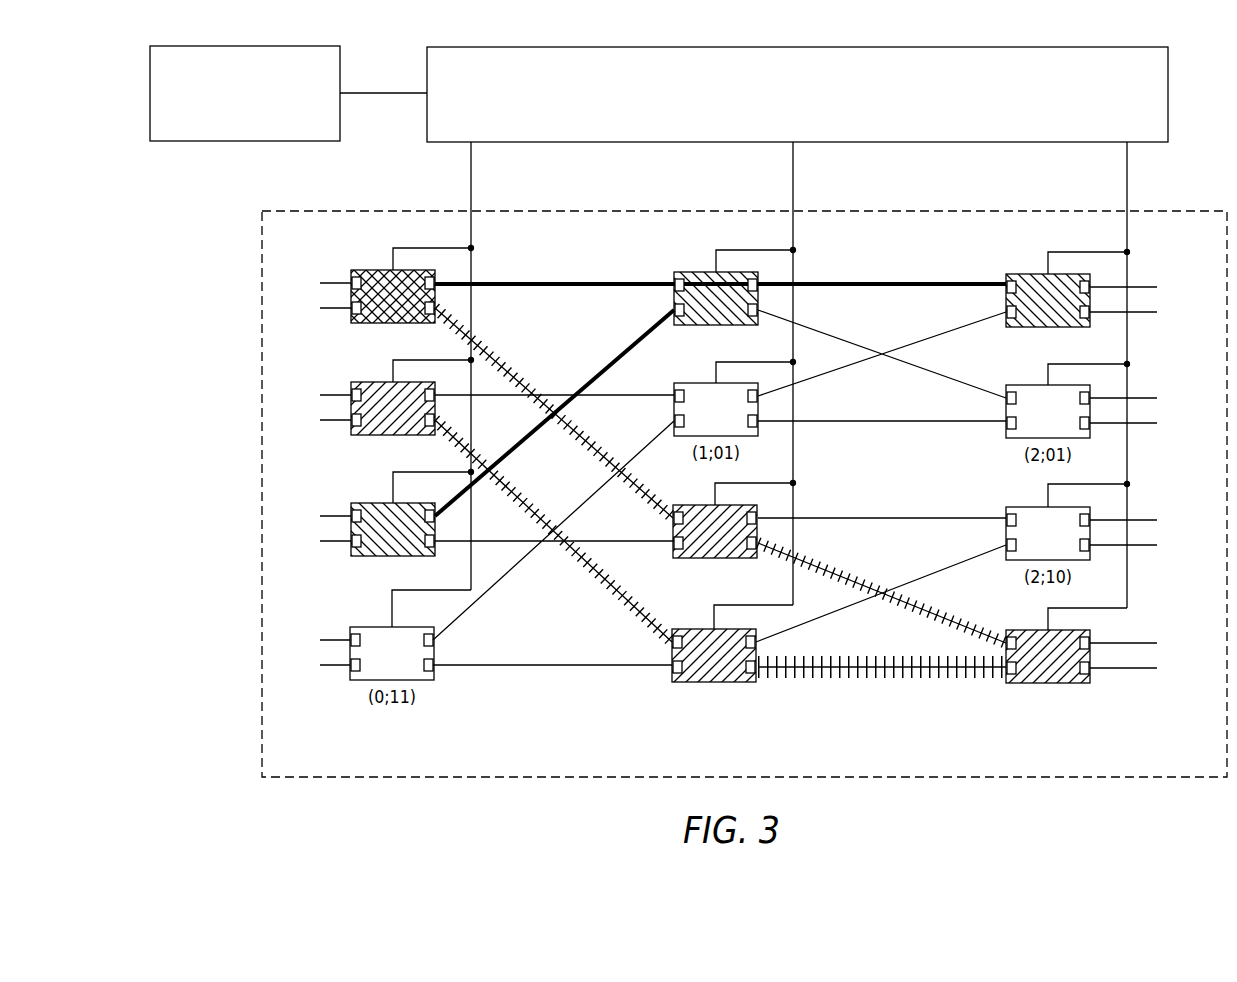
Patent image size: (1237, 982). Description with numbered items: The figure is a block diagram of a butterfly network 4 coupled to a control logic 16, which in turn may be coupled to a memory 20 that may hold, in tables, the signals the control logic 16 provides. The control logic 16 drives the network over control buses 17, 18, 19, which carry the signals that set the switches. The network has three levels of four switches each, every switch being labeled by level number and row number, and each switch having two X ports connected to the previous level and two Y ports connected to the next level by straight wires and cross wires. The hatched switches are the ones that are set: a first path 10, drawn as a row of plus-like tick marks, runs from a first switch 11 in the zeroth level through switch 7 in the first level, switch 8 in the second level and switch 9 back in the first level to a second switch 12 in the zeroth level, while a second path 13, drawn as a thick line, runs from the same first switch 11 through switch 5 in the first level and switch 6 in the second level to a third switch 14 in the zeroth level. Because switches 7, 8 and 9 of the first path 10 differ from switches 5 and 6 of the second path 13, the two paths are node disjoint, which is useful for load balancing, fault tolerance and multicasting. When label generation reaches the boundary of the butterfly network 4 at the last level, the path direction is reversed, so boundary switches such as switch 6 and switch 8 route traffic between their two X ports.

The butterfly network 4 is at (857, 763).
The switch 5 is at (681, 272).
The switch 6 is at (1015, 274).
The switch 7 is at (677, 505).
The switch 8 is at (1011, 630).
The switch 9 is at (678, 629).
The first path 10 is at (512, 358).
The first switch 11 is at (362, 270).
The second switch 12 is at (360, 382).
The second path 13 is at (562, 288).
The third switch 14 is at (360, 503).
The control logic 16 is at (1086, 135).
The control bus 17 is at (1127, 183).
The control bus 18 is at (471, 181).
The control bus 19 is at (793, 182).
The memory 20 is at (172, 141).